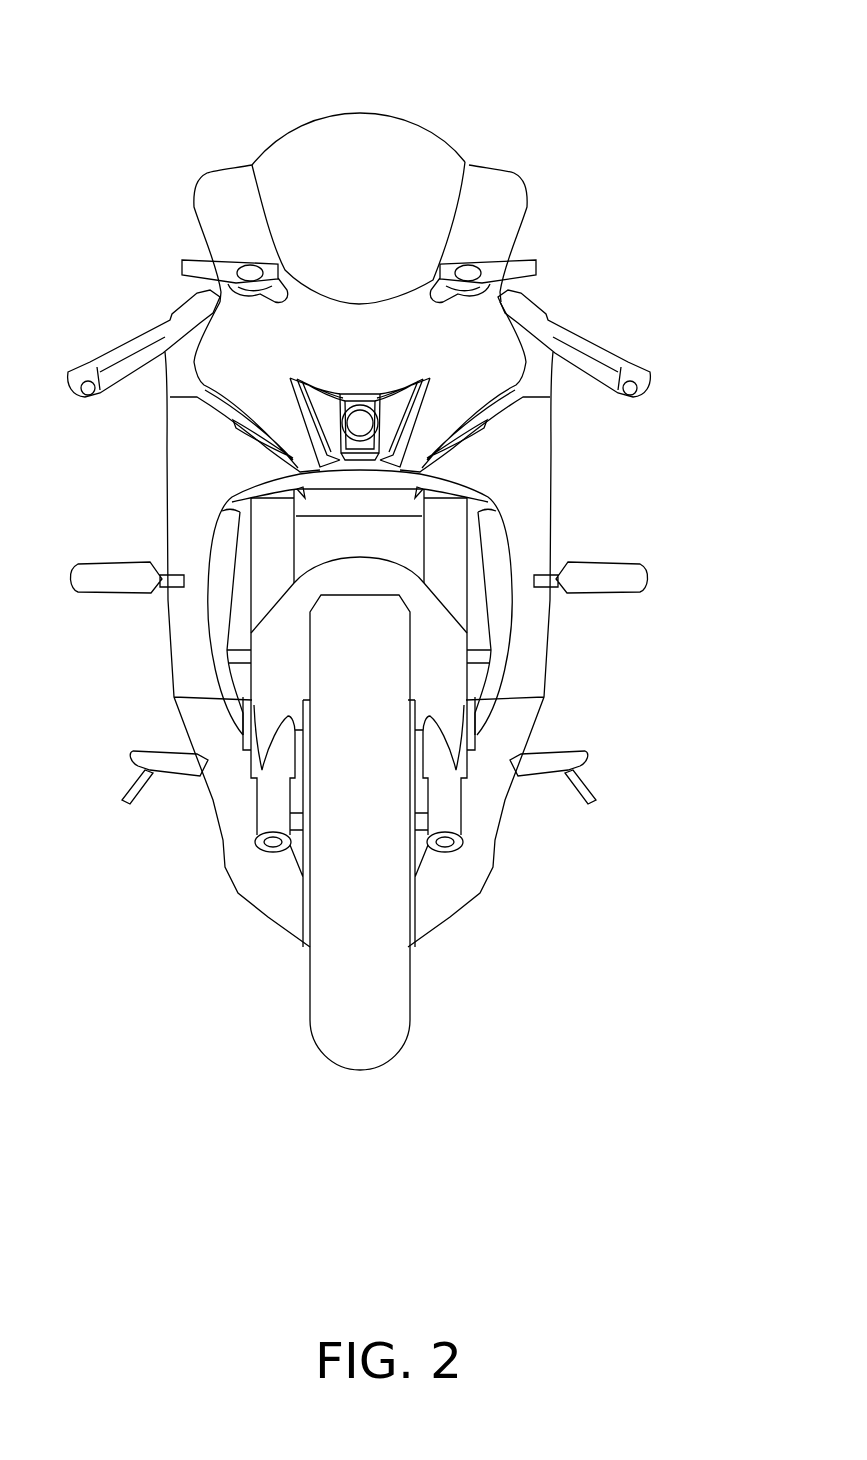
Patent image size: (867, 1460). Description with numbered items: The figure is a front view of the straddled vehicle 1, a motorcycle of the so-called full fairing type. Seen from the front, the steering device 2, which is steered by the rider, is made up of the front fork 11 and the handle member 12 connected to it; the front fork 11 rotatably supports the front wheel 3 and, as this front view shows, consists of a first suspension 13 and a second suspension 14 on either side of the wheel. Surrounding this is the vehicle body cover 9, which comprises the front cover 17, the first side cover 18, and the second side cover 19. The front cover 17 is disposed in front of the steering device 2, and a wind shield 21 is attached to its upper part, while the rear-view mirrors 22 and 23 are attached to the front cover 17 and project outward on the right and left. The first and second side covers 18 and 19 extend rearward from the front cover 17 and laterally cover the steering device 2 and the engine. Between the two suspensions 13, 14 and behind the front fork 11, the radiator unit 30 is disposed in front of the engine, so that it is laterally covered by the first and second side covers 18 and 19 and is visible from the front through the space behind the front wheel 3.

The straddled vehicle 1 is at (525, 67).
The steering device 2 is at (142, 293).
The front wheel 3 is at (325, 992).
The vehicle body cover 9 is at (600, 429).
The front fork 11 is at (258, 545).
The handle member 12 is at (598, 350).
The first suspension 13 is at (452, 583).
The second suspension 14 is at (268, 583).
The front cover 17 is at (387, 330).
The first side cover 18 is at (535, 458).
The second side cover 19 is at (185, 458).
The wind shield 21 is at (305, 152).
The rear-view mirror 22 is at (528, 262).
The rear-view mirror 23 is at (192, 259).
The radiator unit 30 is at (405, 537).